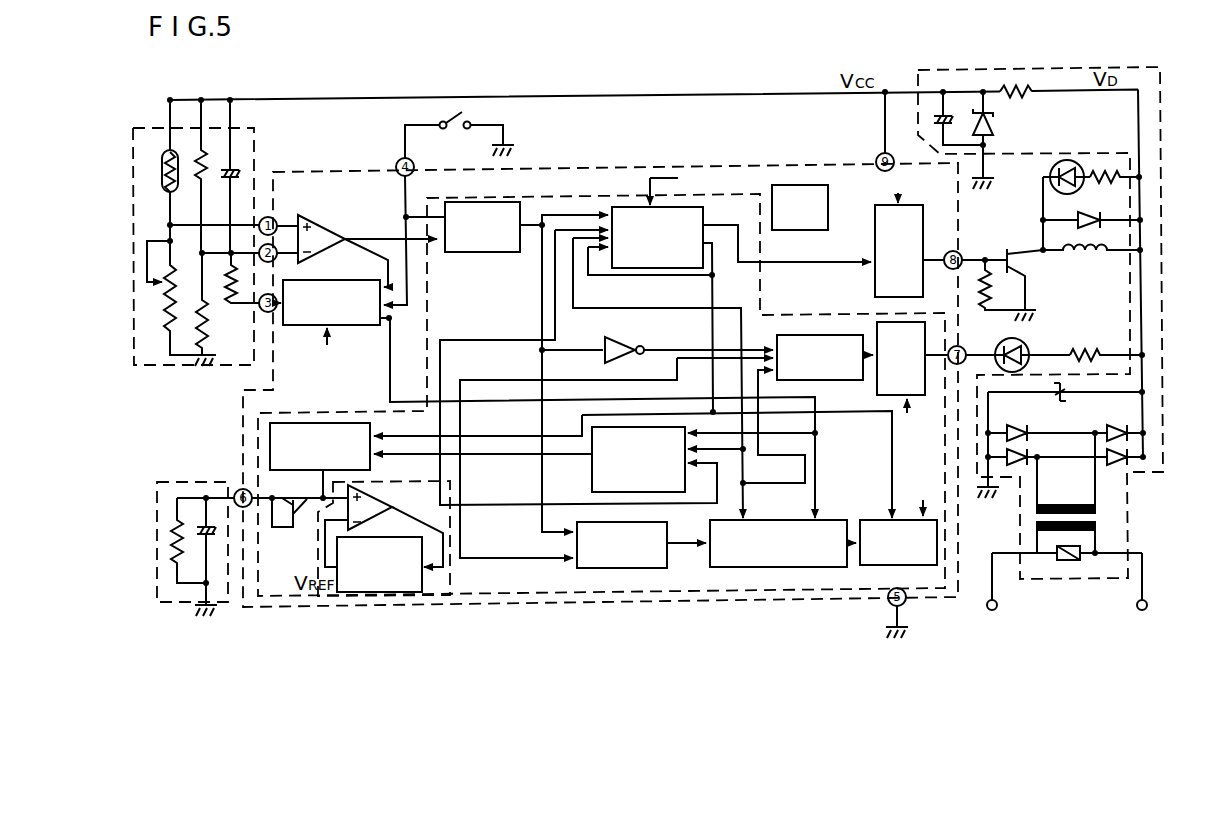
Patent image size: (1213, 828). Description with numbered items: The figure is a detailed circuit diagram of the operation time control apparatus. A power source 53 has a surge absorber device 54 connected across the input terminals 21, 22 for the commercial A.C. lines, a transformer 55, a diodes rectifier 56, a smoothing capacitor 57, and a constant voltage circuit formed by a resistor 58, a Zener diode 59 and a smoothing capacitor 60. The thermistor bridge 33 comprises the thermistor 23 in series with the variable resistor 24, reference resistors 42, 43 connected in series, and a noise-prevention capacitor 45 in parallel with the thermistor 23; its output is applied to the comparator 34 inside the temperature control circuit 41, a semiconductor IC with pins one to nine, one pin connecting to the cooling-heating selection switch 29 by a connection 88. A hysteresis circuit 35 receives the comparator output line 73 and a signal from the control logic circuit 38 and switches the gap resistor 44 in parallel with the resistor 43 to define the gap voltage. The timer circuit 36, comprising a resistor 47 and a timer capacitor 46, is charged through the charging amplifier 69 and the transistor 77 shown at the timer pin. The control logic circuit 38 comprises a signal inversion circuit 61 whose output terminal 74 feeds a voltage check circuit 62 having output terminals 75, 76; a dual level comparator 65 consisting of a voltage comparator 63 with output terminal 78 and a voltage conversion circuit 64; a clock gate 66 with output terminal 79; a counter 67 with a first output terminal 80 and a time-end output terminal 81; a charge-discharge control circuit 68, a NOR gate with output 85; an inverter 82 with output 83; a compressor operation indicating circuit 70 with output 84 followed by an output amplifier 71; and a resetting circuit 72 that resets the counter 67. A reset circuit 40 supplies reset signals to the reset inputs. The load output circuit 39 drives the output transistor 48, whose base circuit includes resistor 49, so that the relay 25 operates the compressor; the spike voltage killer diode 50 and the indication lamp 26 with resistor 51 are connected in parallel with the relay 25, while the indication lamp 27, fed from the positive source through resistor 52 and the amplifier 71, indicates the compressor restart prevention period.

The input terminal 21 is at (998, 607).
The input terminal 22 is at (1148, 608).
The thermistor 23 is at (166, 178).
The variable resistor 24 is at (167, 290).
The output relay 25 is at (1087, 252).
The compressor-operation indication lamp 26 is at (1052, 170).
The indication lamp 27 is at (1030, 346).
The cooling-heating selection switch 29 is at (466, 117).
The thermistor bridge 33 is at (167, 128).
The comparator 34 is at (318, 225).
The hysteresis circuit 35 is at (306, 327).
The timer circuit 36 is at (170, 482).
The control logic circuit 38 is at (466, 198).
The load output circuit 39 is at (874, 256).
The reset circuit 40 is at (828, 190).
The temperature control circuit 41 is at (298, 170).
The reference resistor 42 is at (194, 182).
The reference resistor 43 is at (207, 322).
The gap resistor 44 is at (229, 275).
The capacitor 45 is at (226, 172).
The timer capacitor 46 is at (202, 537).
The resistor 47 is at (175, 550).
The output transistor 48 is at (1015, 262).
The resistor 49 is at (984, 286).
The spike voltage killer diode 50 is at (1098, 218).
The resistor 51 is at (1103, 178).
The resistor 52 is at (1090, 348).
The power source 53 is at (952, 70).
The surge absorber device 54 is at (1082, 556).
The transformer 55 is at (1097, 520).
The diodes rectifier 56 is at (1060, 445).
The smoothing capacitor 57 is at (1066, 400).
The resistor 58 is at (1020, 92).
The Zener diode 59 is at (993, 122).
The smoothing capacitor 60 is at (945, 118).
The signal inversion circuit 61 is at (475, 253).
The voltage check circuit 62 is at (703, 210).
The voltage comparator 63 is at (379, 501).
The voltage conversion circuit 64 is at (420, 567).
The dual level comparator 65 is at (325, 494).
The clock gate 66 is at (658, 523).
The counter 67 is at (862, 521).
The charge-discharge control circuit 68 is at (592, 470).
The charging amplifier 69 is at (270, 444).
The compressor operation indicating circuit 70 is at (778, 335).
The output amplifier 71 is at (870, 352).
The resetting circuit 72 is at (900, 565).
The output line 73 is at (372, 236).
The output terminal 74 is at (541, 258).
The output terminal 75 is at (770, 262).
The output terminal 76 is at (714, 294).
The transistor base line 77 is at (290, 530).
The output terminal 78 is at (410, 516).
The output terminal 79 is at (683, 544).
The first output terminal 80 is at (743, 505).
The output terminal 81 is at (818, 500).
The inverter 82 is at (626, 346).
The output 83 is at (682, 349).
The output 84 is at (872, 360).
The output 85 is at (510, 502).
The signal line 88 is at (403, 195).